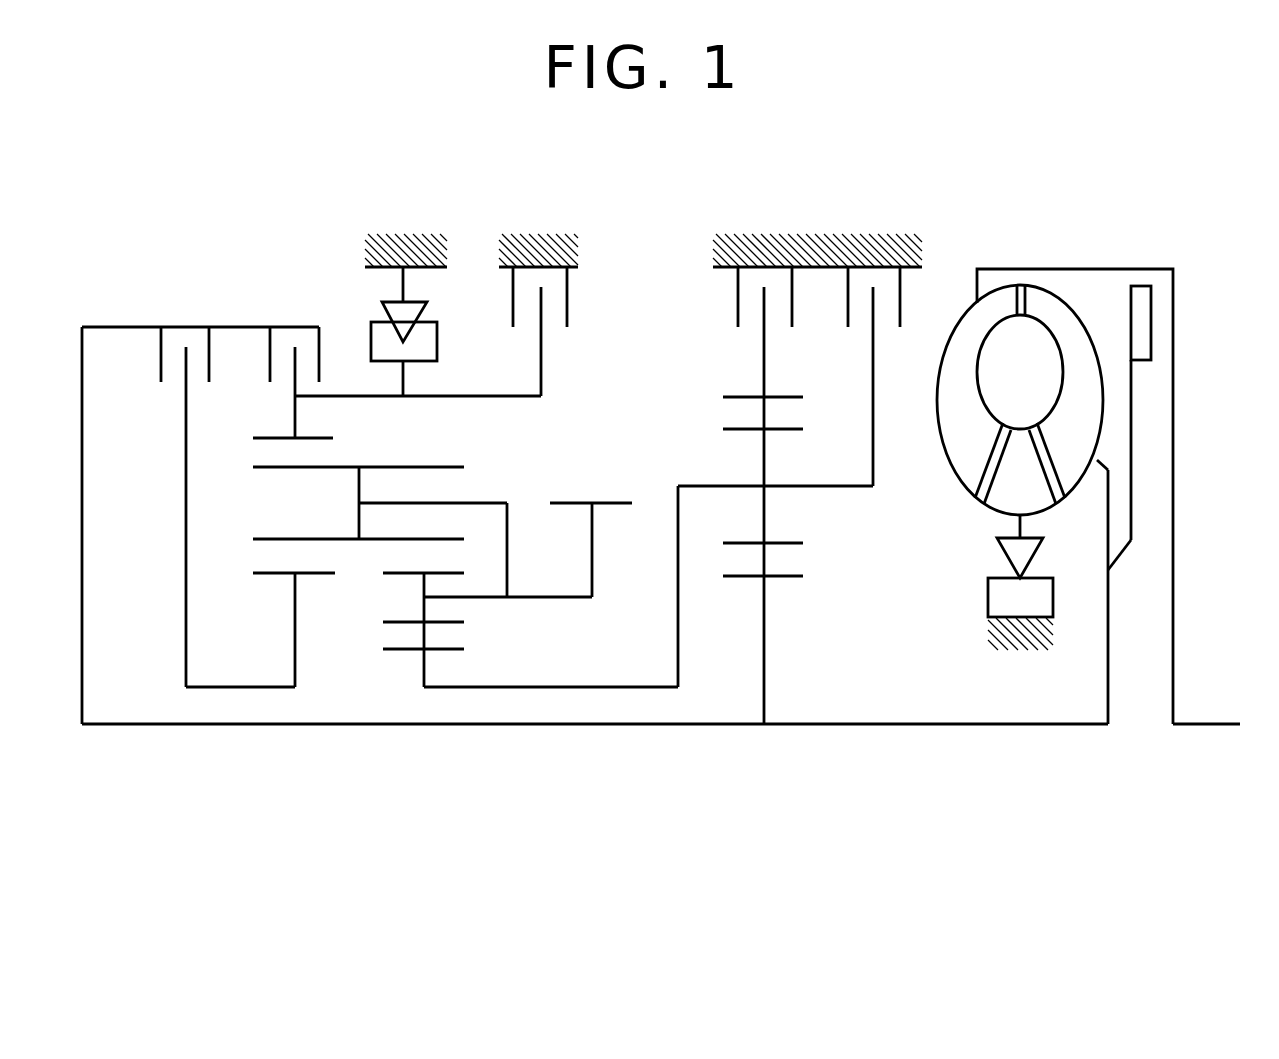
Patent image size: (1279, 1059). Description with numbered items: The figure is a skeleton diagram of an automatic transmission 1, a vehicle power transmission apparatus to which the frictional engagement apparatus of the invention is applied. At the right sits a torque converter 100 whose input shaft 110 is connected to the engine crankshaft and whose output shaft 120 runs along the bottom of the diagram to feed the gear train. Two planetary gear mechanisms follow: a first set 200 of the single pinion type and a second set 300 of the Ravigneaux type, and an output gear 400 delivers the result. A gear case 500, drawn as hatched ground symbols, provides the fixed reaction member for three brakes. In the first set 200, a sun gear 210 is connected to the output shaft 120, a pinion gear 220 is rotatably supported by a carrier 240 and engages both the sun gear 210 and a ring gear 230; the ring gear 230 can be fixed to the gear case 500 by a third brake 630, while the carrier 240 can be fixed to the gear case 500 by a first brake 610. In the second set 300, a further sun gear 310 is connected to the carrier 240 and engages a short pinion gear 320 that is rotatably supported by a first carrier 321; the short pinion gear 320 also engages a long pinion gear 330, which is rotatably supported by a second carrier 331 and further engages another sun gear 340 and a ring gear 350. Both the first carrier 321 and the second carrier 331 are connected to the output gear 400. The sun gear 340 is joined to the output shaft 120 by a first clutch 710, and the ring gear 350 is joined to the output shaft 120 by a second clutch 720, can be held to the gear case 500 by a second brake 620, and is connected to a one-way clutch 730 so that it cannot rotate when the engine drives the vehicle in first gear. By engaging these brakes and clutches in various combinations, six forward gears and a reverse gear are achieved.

The automatic transmission 1 is at (650, 145).
The torque converter 100 is at (1050, 242).
The input shaft 110 is at (1197, 726).
The output shaft 120 is at (891, 724).
The first set 200 is at (811, 555).
The sun gear S (UD) 210 is at (781, 618).
The pinion gear 220 is at (800, 527).
The ring gear R (UD) 230 is at (772, 392).
The carrier C (UD) 240 is at (874, 452).
The second set 300 is at (432, 585).
The sun gear S (D) 310 is at (474, 648).
The short pinion gear 320 is at (375, 582).
The carrier C (1) 321 is at (488, 600).
The long pinion gear 330 is at (458, 460).
The carrier C (2) 331 is at (448, 500).
The sun gear S (S) 340 is at (272, 582).
The ring gear R (1) (R (2)) 350 is at (322, 417).
The output gear 400 is at (616, 496).
The gear case 500 is at (410, 232).
The B1 brake 610 is at (892, 332).
The B2 brake 620 is at (563, 332).
The B3 brake 630 is at (726, 332).
The C1 clutch 710 is at (152, 366).
The C2 clutch 720 is at (262, 366).
The one-way clutch 730 is at (372, 304).